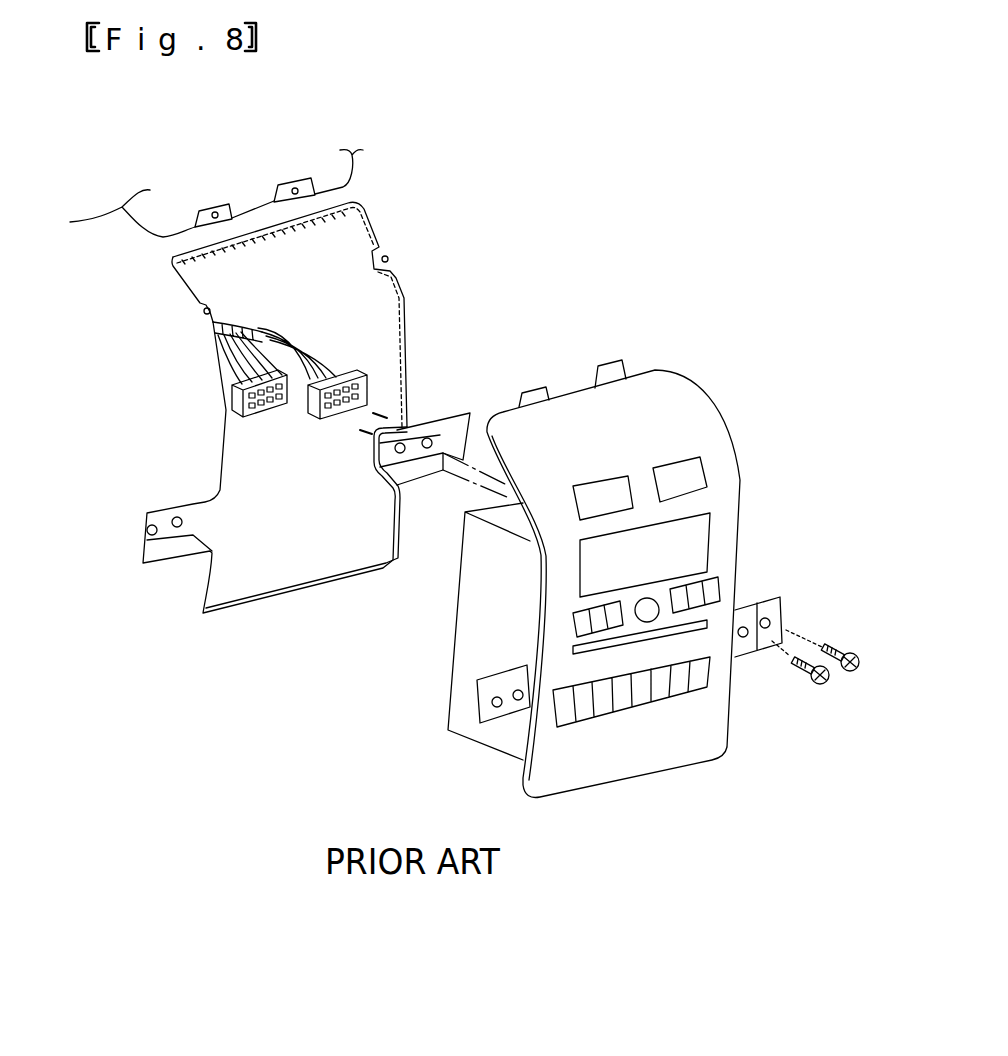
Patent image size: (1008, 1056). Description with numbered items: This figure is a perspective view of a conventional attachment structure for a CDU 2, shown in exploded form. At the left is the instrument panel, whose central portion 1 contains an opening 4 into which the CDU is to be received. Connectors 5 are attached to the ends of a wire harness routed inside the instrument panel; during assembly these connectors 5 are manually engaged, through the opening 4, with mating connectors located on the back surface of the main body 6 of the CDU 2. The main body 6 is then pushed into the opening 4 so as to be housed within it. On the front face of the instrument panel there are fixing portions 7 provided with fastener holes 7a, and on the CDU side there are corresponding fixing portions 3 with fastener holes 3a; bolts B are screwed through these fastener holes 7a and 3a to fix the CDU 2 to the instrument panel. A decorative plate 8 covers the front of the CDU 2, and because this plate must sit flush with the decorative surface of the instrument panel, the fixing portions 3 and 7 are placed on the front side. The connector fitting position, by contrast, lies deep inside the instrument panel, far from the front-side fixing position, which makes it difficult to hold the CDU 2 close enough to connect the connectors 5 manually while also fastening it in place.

The central portion 1 is at (392, 228).
The CDU 2 is at (728, 417).
The fixing portions 3 is at (824, 566).
The fastener holes 3a is at (782, 604).
The opening 4 is at (255, 580).
The connectors 5 is at (367, 367).
The main body 6 is at (470, 643).
The fixing portions 7 is at (408, 408).
The fastener holes 7a is at (398, 450).
The decorative plate 8 is at (720, 463).
The bolts B is at (853, 674).